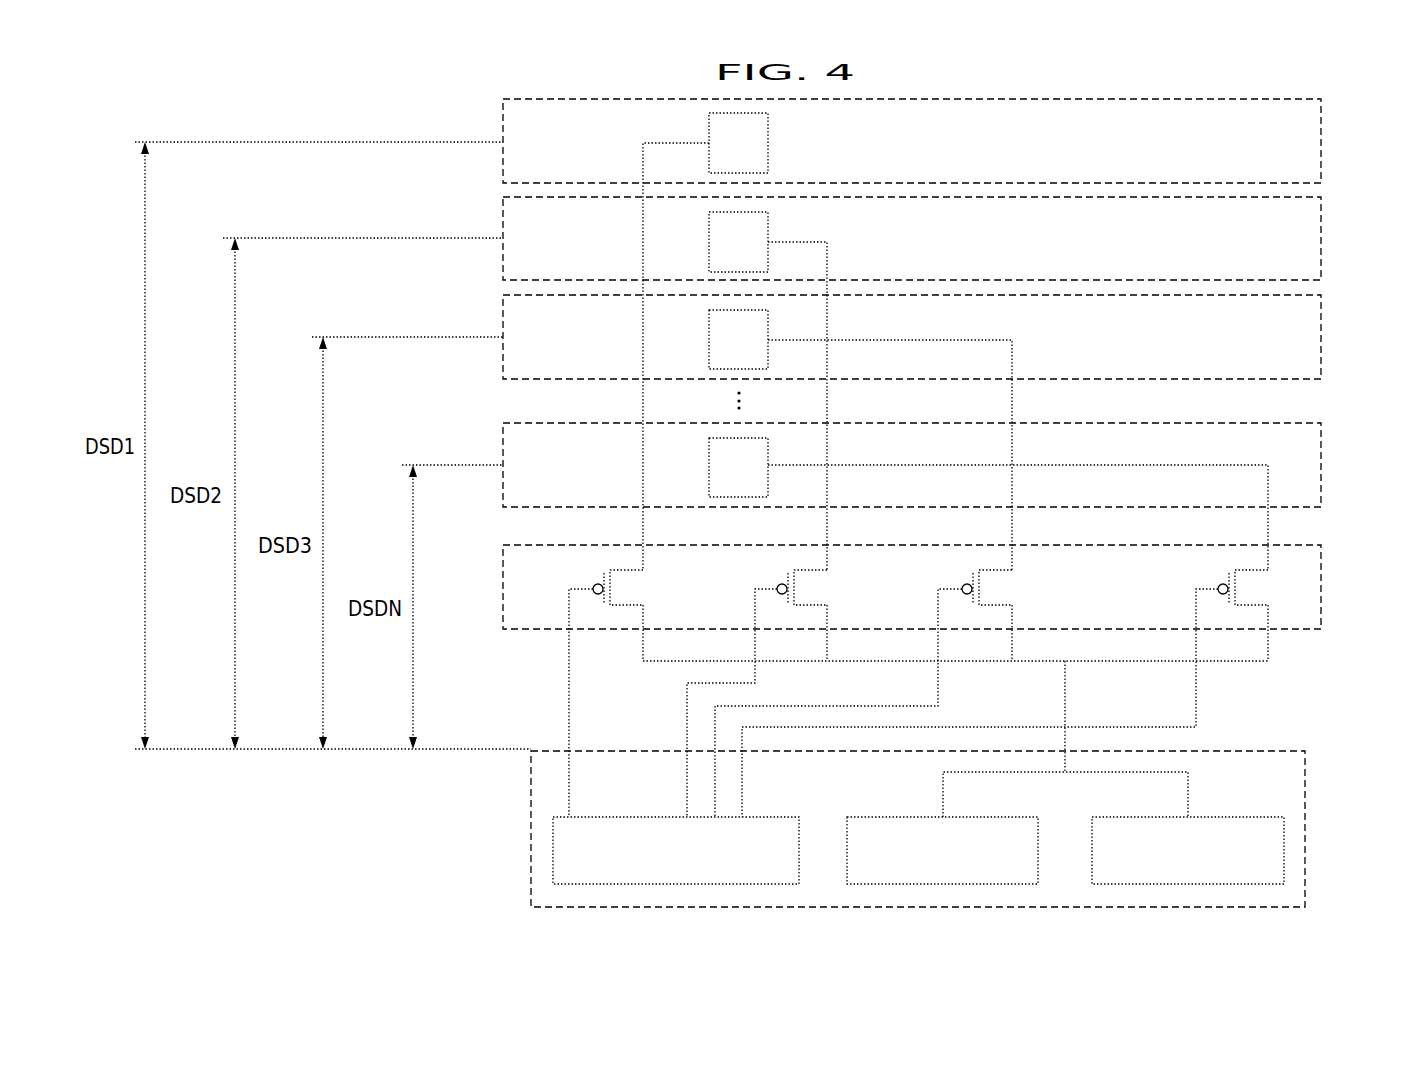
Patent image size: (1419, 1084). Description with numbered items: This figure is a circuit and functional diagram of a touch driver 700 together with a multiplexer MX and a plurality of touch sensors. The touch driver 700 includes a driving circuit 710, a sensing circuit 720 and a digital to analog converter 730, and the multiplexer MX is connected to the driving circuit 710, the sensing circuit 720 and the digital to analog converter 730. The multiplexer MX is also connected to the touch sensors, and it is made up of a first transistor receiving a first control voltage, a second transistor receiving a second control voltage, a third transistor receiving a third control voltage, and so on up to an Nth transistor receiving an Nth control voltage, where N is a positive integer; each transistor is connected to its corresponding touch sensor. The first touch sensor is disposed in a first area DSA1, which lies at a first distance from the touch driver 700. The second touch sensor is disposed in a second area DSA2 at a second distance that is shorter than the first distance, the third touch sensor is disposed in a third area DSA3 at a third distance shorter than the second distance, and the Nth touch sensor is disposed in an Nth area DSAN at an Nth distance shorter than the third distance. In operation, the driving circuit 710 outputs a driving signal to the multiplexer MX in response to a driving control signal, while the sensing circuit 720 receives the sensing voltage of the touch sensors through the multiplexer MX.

The touch driver 700 is at (961, 858).
The driving circuit 710 is at (940, 884).
The sensing circuit 720 is at (1186, 884).
The digital to analog converter 730 is at (675, 884).
The first area DSA1 is at (1321, 140).
The second area DSA2 is at (1321, 238).
The third area DSA3 is at (1321, 337).
The Nth area DSAN is at (1321, 463).
The multiplexer MX is at (1321, 588).